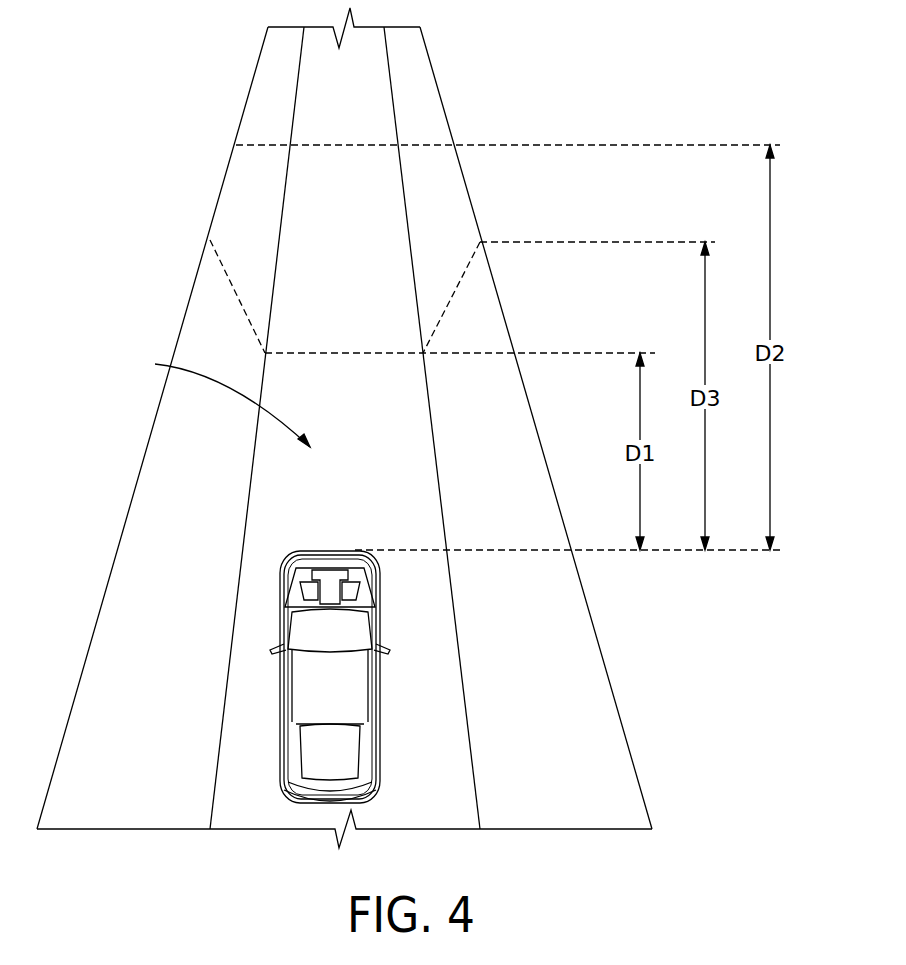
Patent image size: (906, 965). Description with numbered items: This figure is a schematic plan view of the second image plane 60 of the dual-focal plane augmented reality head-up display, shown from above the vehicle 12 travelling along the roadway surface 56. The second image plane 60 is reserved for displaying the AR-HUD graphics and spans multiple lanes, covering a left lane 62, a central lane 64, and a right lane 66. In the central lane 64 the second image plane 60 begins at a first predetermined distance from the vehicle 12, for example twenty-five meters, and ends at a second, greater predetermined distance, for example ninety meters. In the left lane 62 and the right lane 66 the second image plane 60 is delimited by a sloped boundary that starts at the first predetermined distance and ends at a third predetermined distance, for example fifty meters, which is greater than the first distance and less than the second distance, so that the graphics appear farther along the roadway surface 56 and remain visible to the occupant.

The vehicle 12 is at (316, 702).
The roadway surface 56 is at (218, 400).
The second image plane 60 is at (260, 144).
The left lane 62 is at (175, 498).
The central lane 64 is at (400, 510).
The right lane 66 is at (507, 438).